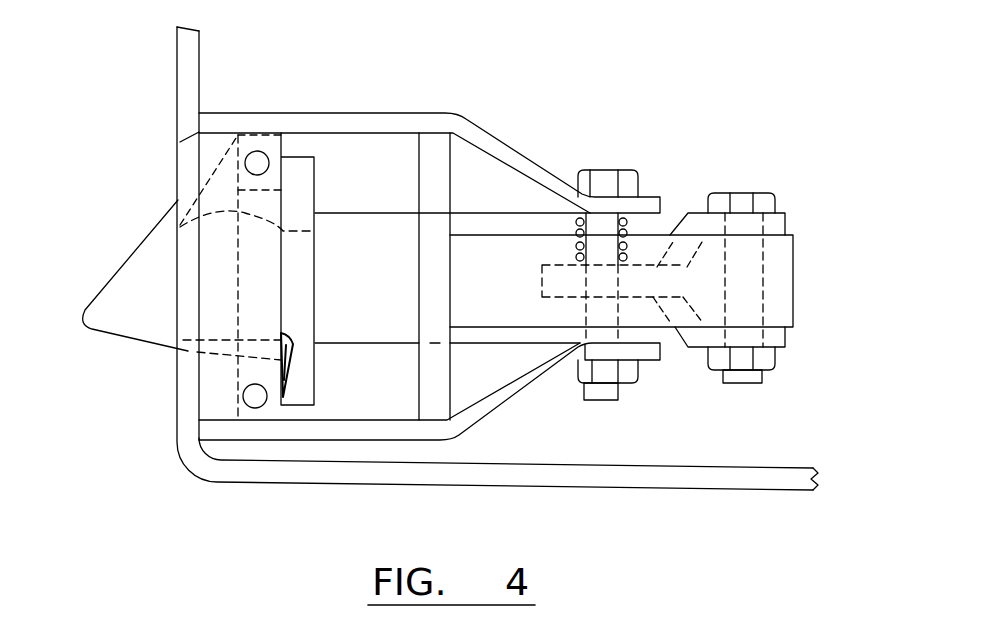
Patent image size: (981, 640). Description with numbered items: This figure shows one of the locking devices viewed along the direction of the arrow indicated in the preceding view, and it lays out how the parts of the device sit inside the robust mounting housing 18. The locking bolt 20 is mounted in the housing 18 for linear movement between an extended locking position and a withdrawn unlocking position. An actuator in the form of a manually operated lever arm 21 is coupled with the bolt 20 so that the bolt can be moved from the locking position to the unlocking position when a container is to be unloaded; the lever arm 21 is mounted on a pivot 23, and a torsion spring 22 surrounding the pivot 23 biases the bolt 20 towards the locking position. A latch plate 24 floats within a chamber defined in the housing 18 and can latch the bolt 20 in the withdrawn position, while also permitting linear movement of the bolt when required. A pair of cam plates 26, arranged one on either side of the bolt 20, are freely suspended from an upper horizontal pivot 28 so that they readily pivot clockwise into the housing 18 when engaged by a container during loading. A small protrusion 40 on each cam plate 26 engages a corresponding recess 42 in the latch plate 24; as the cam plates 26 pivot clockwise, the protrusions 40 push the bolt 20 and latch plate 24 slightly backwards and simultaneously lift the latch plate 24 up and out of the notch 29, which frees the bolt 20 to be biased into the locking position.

The mounting housing 18 is at (448, 120).
The locking bolt 20 is at (385, 288).
The lever arm 21 is at (566, 272).
The torsion spring 22 is at (640, 233).
The pivot 23 is at (605, 222).
The latch plate 24 is at (302, 163).
The cam plates 26 is at (135, 278).
The upper horizontal pivot 28 is at (258, 160).
The notch 29 is at (267, 228).
The protrusion 40 is at (283, 352).
The recess 42 is at (289, 345).